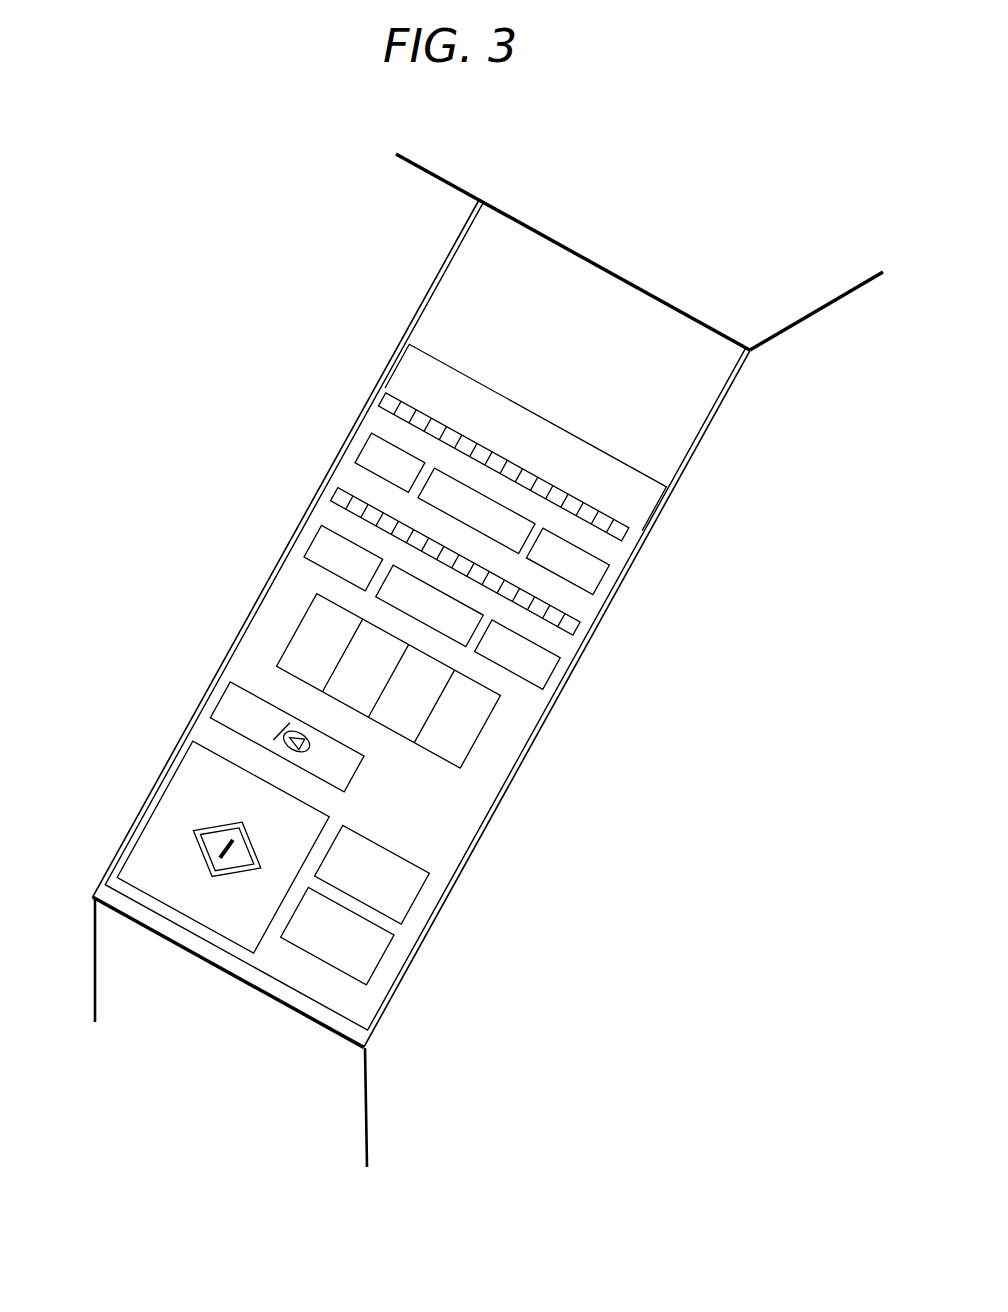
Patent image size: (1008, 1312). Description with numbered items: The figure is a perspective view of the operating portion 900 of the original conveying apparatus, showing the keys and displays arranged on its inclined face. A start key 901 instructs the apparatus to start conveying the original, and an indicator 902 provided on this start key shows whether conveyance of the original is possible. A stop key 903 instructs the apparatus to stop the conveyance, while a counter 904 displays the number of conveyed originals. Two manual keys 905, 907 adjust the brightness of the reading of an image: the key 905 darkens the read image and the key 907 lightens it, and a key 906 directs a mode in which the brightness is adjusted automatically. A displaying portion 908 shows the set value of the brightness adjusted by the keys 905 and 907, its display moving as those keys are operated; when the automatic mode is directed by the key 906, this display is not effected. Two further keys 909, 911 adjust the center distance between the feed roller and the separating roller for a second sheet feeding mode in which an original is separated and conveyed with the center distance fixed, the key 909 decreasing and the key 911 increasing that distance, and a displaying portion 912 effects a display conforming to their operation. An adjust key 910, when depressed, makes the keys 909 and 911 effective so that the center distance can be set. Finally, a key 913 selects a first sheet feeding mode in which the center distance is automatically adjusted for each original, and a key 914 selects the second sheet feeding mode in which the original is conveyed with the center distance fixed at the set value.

The operating portion 900 is at (643, 456).
The start key 901 is at (165, 855).
The indicator 902 is at (217, 827).
The stop key 903 is at (226, 703).
The counter 904 is at (294, 632).
The manual key 905 is at (315, 540).
The key 906 is at (432, 627).
The manual key 907 is at (545, 690).
The displaying portion 908 is at (334, 494).
The key 909 is at (368, 450).
The adjust key 910 is at (445, 518).
The key 911 is at (598, 586).
The displaying portion 912 is at (382, 397).
The key 913 is at (407, 898).
The key 914 is at (375, 960).